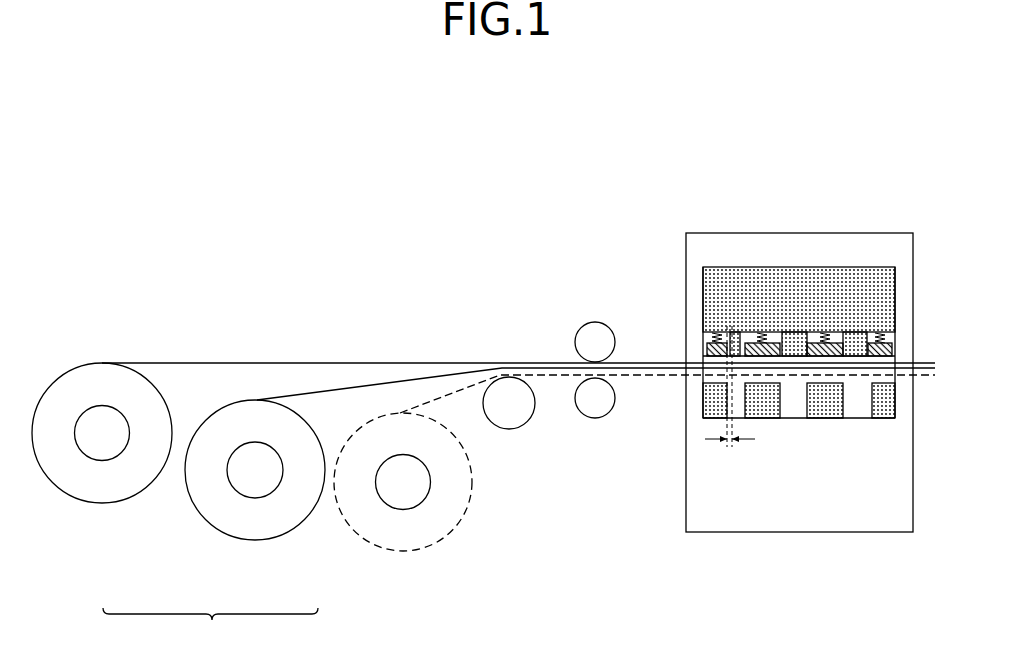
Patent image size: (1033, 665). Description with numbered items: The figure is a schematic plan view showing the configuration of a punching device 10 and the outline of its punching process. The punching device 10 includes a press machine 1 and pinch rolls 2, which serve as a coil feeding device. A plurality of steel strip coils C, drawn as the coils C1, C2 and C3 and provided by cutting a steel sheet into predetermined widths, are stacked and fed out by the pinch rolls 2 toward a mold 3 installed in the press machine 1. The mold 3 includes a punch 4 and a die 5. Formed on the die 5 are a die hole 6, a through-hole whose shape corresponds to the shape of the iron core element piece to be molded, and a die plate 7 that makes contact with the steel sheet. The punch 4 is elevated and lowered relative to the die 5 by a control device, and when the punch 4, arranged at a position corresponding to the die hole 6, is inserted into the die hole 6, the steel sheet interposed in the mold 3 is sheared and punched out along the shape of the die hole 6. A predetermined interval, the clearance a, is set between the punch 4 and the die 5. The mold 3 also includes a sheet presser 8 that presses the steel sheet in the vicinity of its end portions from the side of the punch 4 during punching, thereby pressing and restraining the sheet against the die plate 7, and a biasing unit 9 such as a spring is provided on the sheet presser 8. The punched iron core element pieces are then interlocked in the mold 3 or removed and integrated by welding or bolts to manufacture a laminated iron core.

The press machine 1 is at (887, 233).
The pinch rolls 2 is at (593, 330).
The mold 3 is at (755, 267).
The punch 4 is at (857, 332).
The die 5 is at (825, 408).
The die hole 6 is at (793, 408).
The die plate 7 is at (883, 400).
The sheet presser 8 is at (893, 347).
The biasing unit 9 is at (708, 345).
The punching device 10 is at (798, 319).
The clearance a is at (730, 395).
The steel strip coil C1 is at (99, 487).
The steel strip coil C2 is at (242, 527).
The steel strip coil C3 is at (360, 530).
The steel strip coils C is at (210, 631).